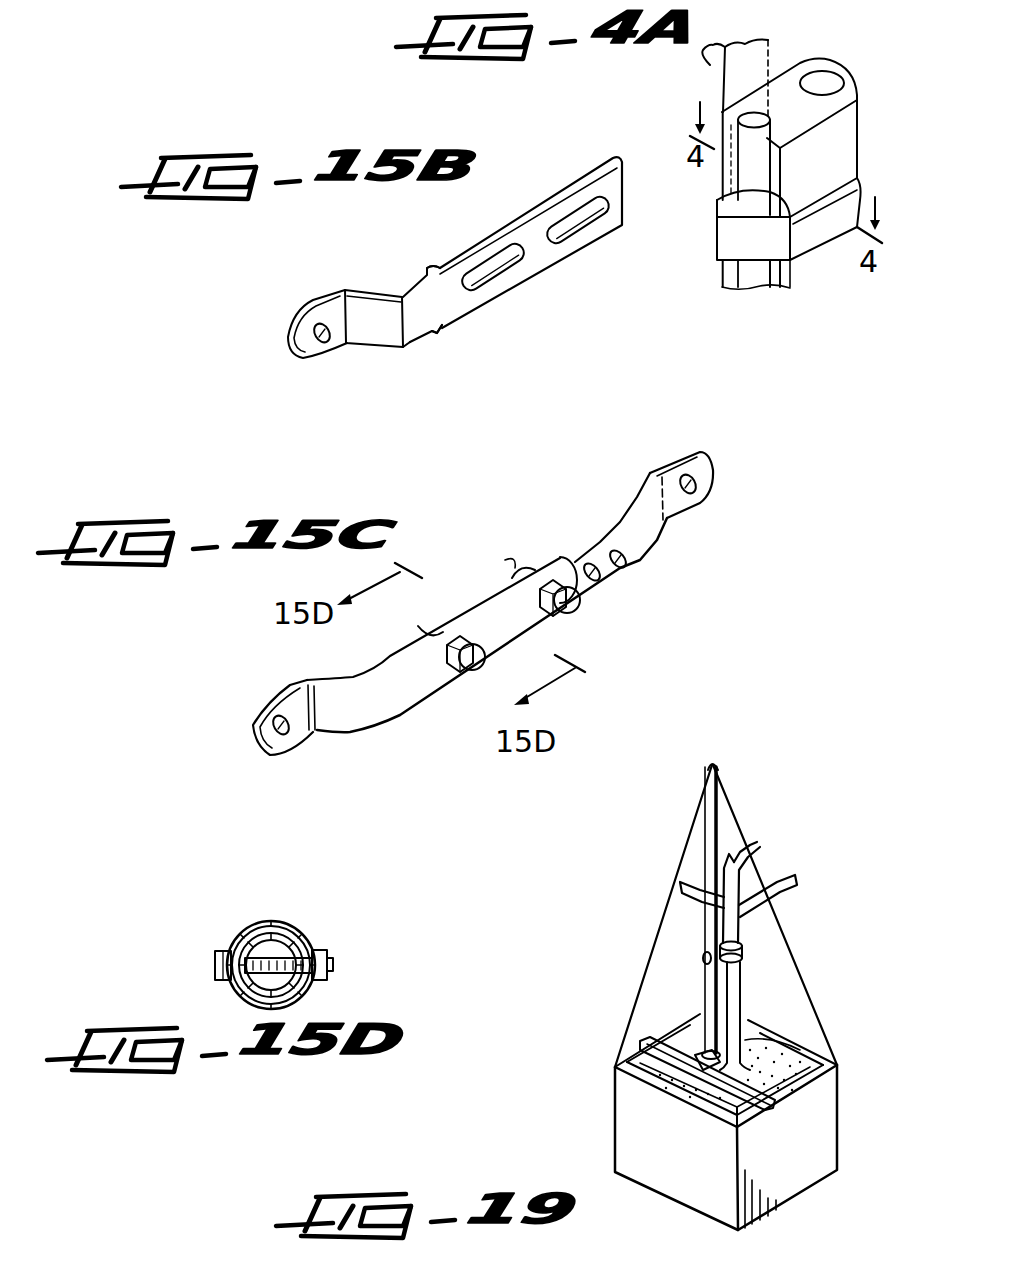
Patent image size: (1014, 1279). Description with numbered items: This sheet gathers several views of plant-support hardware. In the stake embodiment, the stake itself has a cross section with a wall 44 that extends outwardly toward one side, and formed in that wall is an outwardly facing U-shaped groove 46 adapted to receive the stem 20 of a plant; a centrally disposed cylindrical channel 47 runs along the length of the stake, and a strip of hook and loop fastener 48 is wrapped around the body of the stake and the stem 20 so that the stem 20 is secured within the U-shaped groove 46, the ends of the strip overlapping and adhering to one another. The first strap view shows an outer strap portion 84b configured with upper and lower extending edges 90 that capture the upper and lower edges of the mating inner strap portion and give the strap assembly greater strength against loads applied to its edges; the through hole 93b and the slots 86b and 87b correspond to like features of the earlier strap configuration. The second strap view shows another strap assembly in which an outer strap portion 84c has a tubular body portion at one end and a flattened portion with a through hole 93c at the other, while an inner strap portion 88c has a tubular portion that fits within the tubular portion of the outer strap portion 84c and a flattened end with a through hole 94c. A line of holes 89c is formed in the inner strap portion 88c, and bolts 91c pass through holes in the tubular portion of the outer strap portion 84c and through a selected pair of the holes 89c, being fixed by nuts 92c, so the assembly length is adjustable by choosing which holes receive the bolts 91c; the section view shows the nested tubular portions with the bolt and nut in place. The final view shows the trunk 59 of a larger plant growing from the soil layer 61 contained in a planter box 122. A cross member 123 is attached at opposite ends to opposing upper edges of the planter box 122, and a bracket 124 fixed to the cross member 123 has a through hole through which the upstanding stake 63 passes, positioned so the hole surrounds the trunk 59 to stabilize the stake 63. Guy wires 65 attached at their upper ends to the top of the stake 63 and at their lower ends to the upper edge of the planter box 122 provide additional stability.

In FIG. 4A, the stem of a plant 20 is at (710, 65).
In FIG. 4A, the wall 44 is at (773, 173).
In FIG. 4A, the U-shaped groove 46 is at (753, 122).
In FIG. 4A, the cylindrical channel 47 is at (827, 84).
In FIG. 4A, the hook and loop fastener strip 48 is at (718, 228).
In FIG. 15B, the outer strap portion 84b is at (402, 347).
In FIG. 15B, the slot 86b is at (497, 268).
In FIG. 15B, the slot 87b is at (580, 223).
In FIG. 15B, the extending edges 90 is at (422, 275).
In FIG. 15B, the through hole 93b is at (315, 345).
In FIG. 15C, the outer strap portion 84c is at (343, 733).
In FIG. 15D, the outer strap portion 84c is at (240, 935).
In FIG. 15C, the inner strap portion 88c is at (630, 512).
In FIG. 15D, the inner strap portion 88c is at (293, 898).
In FIG. 15C, the line of holes 89c is at (606, 583).
In FIG. 15C, the bolts 91c is at (567, 602).
In FIG. 15D, the bolts 91c is at (215, 966).
In FIG. 15C, the nuts 92c is at (420, 628).
In FIG. 15D, the nuts 92c is at (318, 950).
In FIG. 15C, the through hole 93c is at (283, 742).
In FIG. 15C, the through hole 94c is at (681, 483).
In FIG. 19, the trunk 59 is at (742, 988).
In FIG. 19, the soil layer 61 is at (787, 1090).
In FIG. 19, the stake 63 is at (705, 823).
In FIG. 19, the guy wires 65 is at (642, 978).
In FIG. 19, the planter box 122 is at (830, 1137).
In FIG. 19, the cross member 123 is at (645, 1045).
In FIG. 19, the bracket 124 is at (712, 1062).